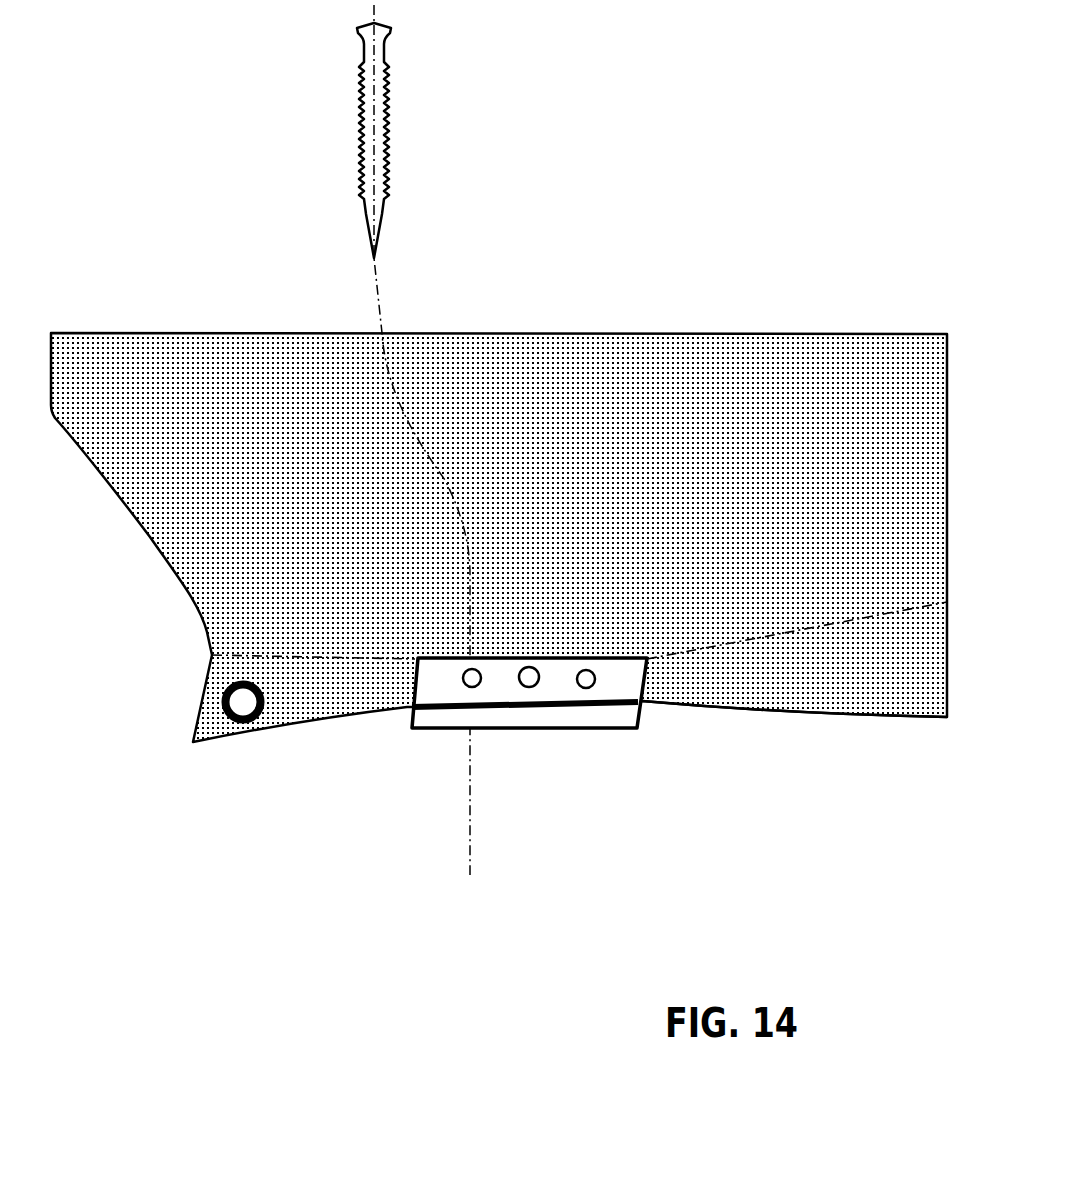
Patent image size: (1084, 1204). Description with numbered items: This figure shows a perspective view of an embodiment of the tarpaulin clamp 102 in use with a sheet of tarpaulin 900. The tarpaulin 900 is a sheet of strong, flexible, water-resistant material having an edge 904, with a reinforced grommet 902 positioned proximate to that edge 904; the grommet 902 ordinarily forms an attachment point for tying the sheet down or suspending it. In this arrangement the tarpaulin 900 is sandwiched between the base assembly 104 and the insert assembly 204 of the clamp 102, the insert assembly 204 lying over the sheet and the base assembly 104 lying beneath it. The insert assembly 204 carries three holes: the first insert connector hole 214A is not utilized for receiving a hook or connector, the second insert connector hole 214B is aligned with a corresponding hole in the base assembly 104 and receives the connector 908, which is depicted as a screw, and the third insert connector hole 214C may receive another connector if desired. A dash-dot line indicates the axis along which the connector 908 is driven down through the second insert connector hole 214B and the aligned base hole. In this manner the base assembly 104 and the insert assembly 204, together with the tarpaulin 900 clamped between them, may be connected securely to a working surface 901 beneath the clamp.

The tarpaulin 900 is at (788, 445).
The working surface 901 is at (859, 846).
The grommet 902 is at (242, 721).
The edge 904 is at (753, 714).
The connector 908 is at (383, 160).
The tarpaulin clamp 102 is at (403, 762).
The base assembly 104 is at (613, 733).
The insert assembly 204 is at (444, 686).
The first insert connector hole 214A is at (530, 667).
The second insert connector hole 214B is at (623, 633).
The third insert connector hole 214C is at (471, 668).